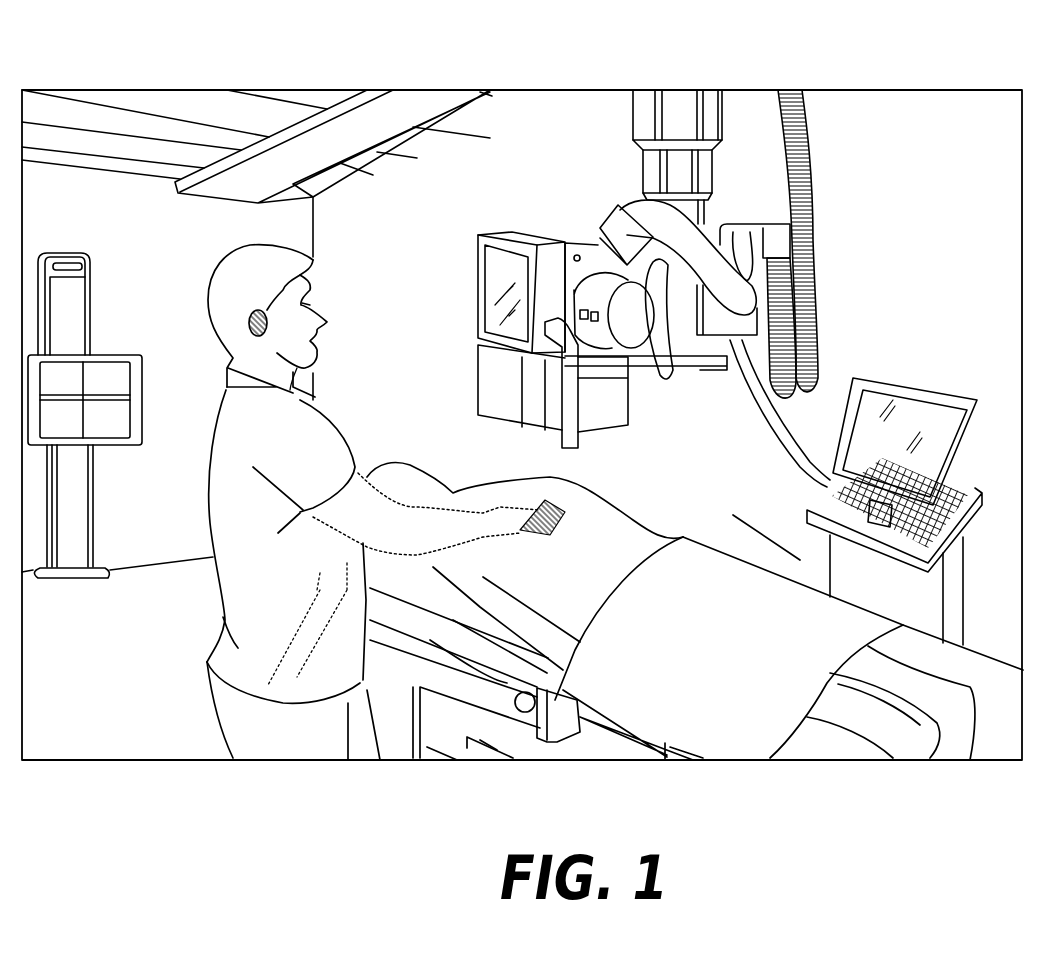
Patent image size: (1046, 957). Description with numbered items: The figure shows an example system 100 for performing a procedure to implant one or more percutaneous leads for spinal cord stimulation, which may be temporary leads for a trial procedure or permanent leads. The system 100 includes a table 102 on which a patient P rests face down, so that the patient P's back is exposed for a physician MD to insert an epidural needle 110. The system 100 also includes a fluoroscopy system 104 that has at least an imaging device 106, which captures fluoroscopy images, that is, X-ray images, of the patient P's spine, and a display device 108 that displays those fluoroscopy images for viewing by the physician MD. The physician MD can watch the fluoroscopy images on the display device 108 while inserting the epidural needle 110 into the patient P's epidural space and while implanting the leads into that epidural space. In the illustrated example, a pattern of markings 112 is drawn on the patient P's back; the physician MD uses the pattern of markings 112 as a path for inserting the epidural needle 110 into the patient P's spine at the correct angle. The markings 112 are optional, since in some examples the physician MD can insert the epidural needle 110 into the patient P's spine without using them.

The system 100 is at (920, 236).
The table 102 is at (437, 600).
The fluoroscopy system 104 is at (584, 176).
The imaging device 106 is at (610, 407).
The display device 108 is at (473, 287).
The epidural needle 110 is at (560, 523).
The pattern of markings 112 is at (533, 547).
The physician MD is at (297, 447).
The patient P is at (600, 580).